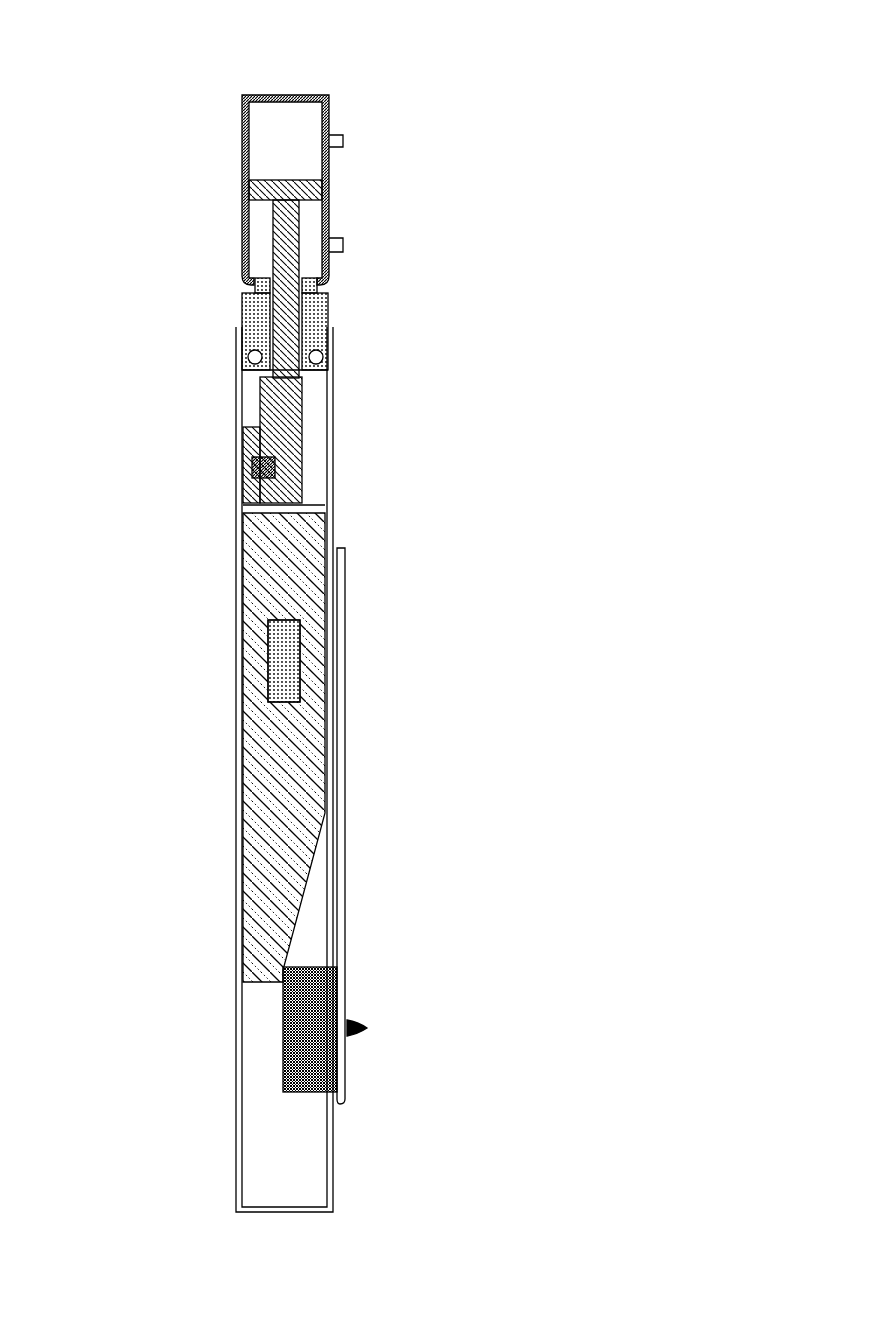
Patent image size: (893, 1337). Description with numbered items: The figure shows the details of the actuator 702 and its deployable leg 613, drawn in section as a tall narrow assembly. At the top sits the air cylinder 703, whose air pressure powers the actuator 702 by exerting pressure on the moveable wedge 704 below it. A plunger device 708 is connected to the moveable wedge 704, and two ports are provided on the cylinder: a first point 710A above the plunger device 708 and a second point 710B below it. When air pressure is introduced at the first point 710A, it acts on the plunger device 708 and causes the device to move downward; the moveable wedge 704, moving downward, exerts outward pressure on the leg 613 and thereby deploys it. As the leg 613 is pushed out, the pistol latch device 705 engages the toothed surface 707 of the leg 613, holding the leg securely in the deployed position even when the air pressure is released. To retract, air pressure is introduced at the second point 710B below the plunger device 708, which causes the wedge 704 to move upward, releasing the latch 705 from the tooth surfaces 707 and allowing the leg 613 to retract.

The actuator 702 is at (284, 52).
The air cylinder 703 is at (327, 94).
The first point 710A is at (344, 138).
The second point 710B is at (344, 240).
The plunger device 708 is at (237, 343).
The tooth surfaces 707 is at (327, 543).
The pistol latch device 705 is at (290, 643).
The moveable wedge 704 is at (267, 773).
The leg 613 is at (345, 915).